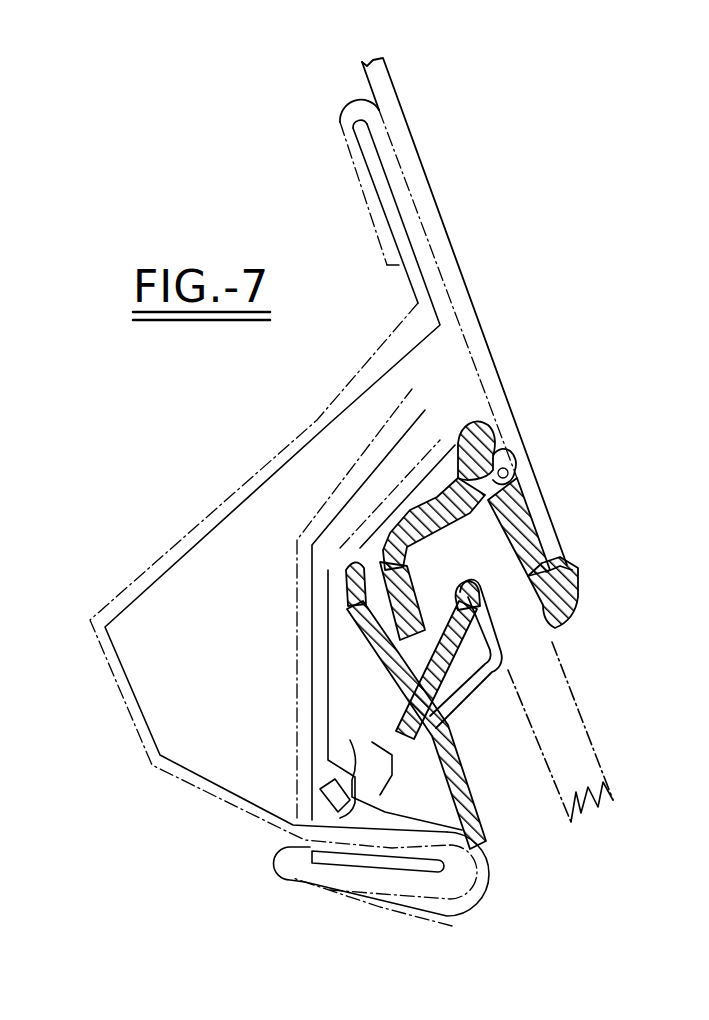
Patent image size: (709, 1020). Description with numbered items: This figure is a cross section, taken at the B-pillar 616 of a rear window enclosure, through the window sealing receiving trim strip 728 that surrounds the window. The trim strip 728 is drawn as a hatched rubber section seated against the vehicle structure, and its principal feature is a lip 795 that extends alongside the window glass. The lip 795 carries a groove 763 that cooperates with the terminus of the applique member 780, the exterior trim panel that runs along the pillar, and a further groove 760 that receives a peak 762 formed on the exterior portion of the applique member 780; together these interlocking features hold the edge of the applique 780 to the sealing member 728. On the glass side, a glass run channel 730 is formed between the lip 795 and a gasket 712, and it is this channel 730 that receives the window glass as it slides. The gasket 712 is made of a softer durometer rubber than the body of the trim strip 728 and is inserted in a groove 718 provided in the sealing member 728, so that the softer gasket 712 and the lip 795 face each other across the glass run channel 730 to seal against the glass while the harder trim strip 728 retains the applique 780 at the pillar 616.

The B-pillar 616 is at (547, 308).
The applique member 780 is at (495, 355).
The groove 760 is at (494, 452).
The peak 762 is at (518, 478).
The window sealing receiving trim strip 728 is at (533, 522).
The groove 763 is at (566, 562).
The lip 795 is at (581, 585).
The glass run channel 730 is at (497, 580).
The gasket 712 is at (470, 636).
The groove 718 is at (468, 744).